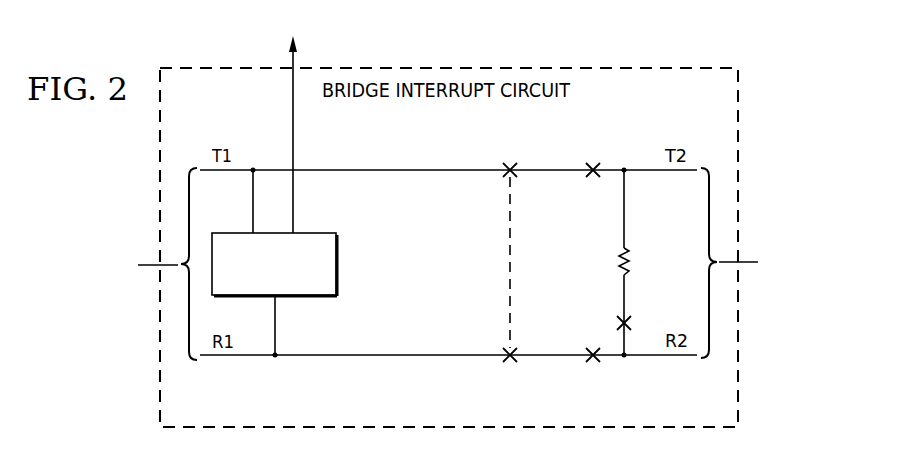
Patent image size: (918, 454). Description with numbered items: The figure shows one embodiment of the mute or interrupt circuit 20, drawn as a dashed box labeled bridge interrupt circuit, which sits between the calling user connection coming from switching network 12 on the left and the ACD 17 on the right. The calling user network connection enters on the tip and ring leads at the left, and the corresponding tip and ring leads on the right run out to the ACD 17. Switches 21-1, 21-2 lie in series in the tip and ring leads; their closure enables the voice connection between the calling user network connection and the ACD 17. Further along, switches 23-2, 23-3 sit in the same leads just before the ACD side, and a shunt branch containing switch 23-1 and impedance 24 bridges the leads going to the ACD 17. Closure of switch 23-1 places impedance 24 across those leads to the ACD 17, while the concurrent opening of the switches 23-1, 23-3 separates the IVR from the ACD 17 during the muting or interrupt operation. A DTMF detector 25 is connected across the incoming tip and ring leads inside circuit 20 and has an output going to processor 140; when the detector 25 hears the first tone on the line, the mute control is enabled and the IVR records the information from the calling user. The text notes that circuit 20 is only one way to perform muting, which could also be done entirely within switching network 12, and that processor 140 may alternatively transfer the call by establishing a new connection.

The bridge interrupt circuit 20 is at (151, 346).
The switch 21-1 is at (513, 164).
The switch 21-2 is at (513, 362).
The switch 23-1 is at (617, 321).
The switch 23-2 is at (598, 164).
The switch 23-3 is at (596, 362).
The impedance 24 is at (636, 262).
The DTMF detector 25 is at (305, 297).
The switching network 12 is at (97, 266).
The ACD 17 is at (783, 262).
The processor 140 is at (293, 121).